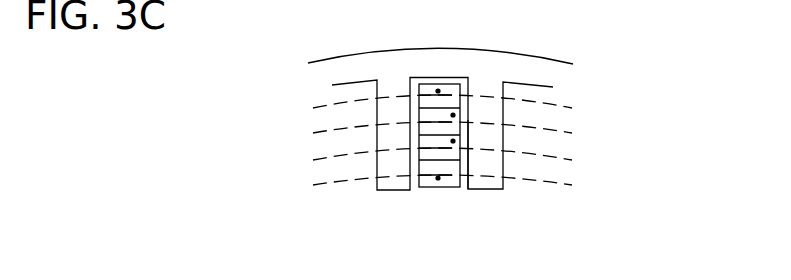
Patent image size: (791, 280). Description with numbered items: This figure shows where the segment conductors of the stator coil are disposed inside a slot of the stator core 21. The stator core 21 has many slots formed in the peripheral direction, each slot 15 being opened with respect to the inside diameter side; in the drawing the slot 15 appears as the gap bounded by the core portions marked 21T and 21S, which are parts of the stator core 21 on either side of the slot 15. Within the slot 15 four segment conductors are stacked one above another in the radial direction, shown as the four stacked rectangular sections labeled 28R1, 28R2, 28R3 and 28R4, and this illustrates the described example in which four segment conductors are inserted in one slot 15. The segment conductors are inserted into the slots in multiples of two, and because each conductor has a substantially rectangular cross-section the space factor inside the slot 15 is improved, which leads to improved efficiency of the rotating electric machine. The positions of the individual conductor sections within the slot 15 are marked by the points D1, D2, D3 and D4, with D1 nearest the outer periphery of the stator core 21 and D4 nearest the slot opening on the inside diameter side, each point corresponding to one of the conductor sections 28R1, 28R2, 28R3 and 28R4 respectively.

The stator core 21 is at (525, 55).
The tooth 21T is at (392, 190).
The slot 21S is at (467, 188).
The slot 15 is at (468, 192).
The first radial reference line 28R1 is at (313, 108).
The second radial reference line 28R2 is at (312, 133).
The third radial reference line 28R3 is at (312, 160).
The fourth radial reference line 28R4 is at (312, 185).
The first position D1 is at (438, 91).
The second position D2 is at (453, 115).
The third position D3 is at (453, 141).
The fourth position D4 is at (438, 180).